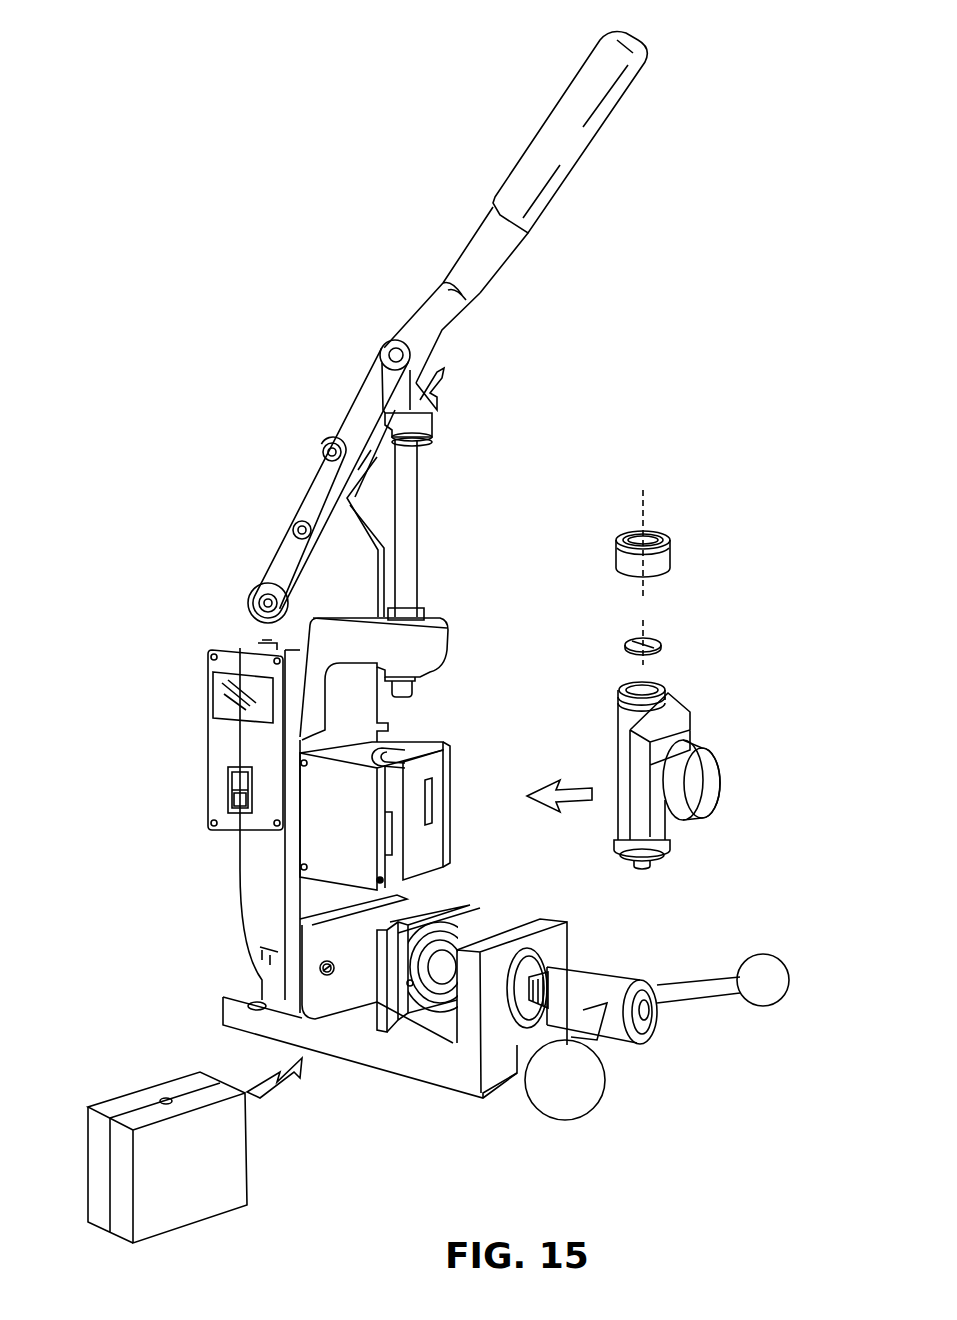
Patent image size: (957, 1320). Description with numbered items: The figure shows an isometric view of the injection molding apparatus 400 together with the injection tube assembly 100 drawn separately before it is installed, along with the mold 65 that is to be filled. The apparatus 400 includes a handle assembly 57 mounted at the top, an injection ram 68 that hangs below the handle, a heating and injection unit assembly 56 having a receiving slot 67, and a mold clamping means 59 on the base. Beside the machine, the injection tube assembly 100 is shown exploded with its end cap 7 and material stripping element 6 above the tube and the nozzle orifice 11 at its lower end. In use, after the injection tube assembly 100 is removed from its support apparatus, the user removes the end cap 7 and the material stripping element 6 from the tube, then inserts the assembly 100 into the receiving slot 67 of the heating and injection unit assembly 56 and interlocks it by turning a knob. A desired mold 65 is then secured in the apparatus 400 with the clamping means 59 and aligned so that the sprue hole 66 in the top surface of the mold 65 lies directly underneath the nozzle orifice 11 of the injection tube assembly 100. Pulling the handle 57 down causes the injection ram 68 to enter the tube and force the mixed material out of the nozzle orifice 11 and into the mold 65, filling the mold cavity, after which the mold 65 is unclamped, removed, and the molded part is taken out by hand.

The injection molding apparatus 400 is at (140, 25).
The handle assembly 57 is at (478, 257).
The injection ram 68 is at (410, 535).
The receiving slot 67 is at (408, 772).
The heating and injection unit assembly 56 is at (440, 836).
The mold clamping means 59 is at (410, 1000).
The injection tube assembly 100 is at (735, 535).
The end cap 7 is at (615, 555).
The material stripping element 6 is at (623, 645).
The nozzle orifice 11 is at (640, 873).
The mold 65 is at (202, 1167).
The sprue hole 66 is at (170, 1100).